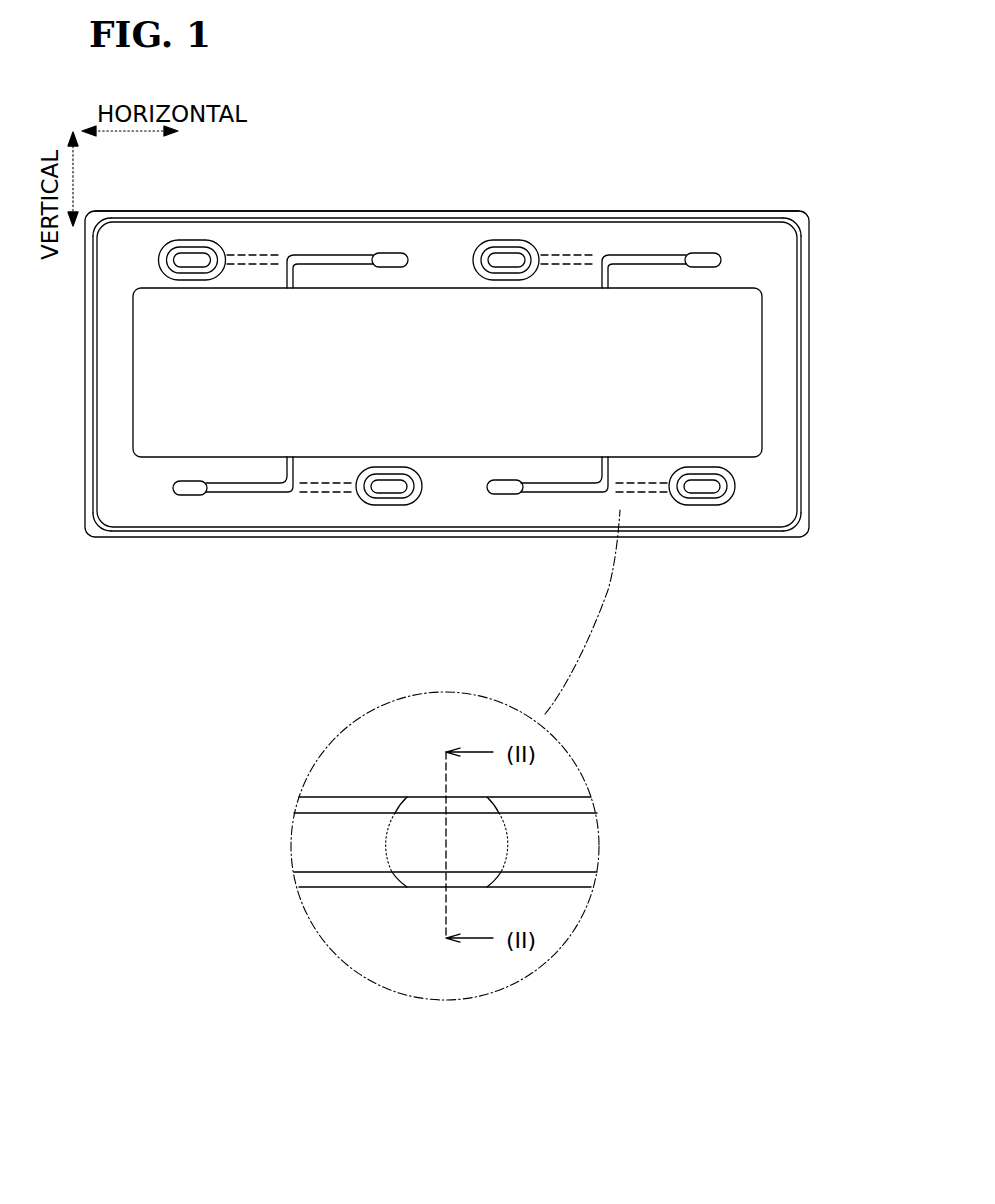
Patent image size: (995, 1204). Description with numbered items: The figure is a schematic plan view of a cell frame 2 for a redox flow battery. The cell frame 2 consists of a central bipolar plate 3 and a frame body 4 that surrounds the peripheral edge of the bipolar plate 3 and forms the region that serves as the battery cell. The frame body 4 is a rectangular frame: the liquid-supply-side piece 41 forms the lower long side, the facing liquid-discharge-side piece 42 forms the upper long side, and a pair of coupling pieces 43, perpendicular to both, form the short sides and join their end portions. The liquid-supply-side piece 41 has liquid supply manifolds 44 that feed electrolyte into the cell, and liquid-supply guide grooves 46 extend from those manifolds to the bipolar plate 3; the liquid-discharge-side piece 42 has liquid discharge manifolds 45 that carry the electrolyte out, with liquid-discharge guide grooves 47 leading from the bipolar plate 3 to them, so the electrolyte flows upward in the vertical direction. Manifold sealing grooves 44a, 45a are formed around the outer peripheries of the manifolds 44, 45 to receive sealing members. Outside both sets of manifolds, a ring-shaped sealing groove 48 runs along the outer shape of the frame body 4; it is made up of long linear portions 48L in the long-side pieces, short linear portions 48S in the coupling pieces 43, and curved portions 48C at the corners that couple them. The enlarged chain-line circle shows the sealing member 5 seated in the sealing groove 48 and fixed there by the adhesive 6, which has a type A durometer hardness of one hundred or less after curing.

The cell frame 2 is at (743, 200).
The bipolar plate 3 is at (738, 352).
The frame body 4 is at (803, 417).
The sealing member 5 is at (553, 537).
The adhesive 6 is at (415, 880).
The liquid-supply-side piece 41 is at (467, 537).
The liquid-discharge-side piece 42 is at (287, 211).
The coupling pieces 43 is at (118, 336).
The liquid supply manifolds 44 is at (198, 496).
The manifold sealing grooves 44a is at (403, 492).
The liquid discharge manifolds 45 is at (174, 247).
The manifold sealing grooves 45a is at (188, 257).
The liquid-supply guide grooves 46 is at (266, 494).
The liquid-discharge guide grooves 47 is at (250, 252).
The sealing groove 48 is at (182, 536).
The curved portions 48C is at (104, 224).
The long linear portions 48L is at (413, 213).
The short linear portions 48S is at (86, 445).